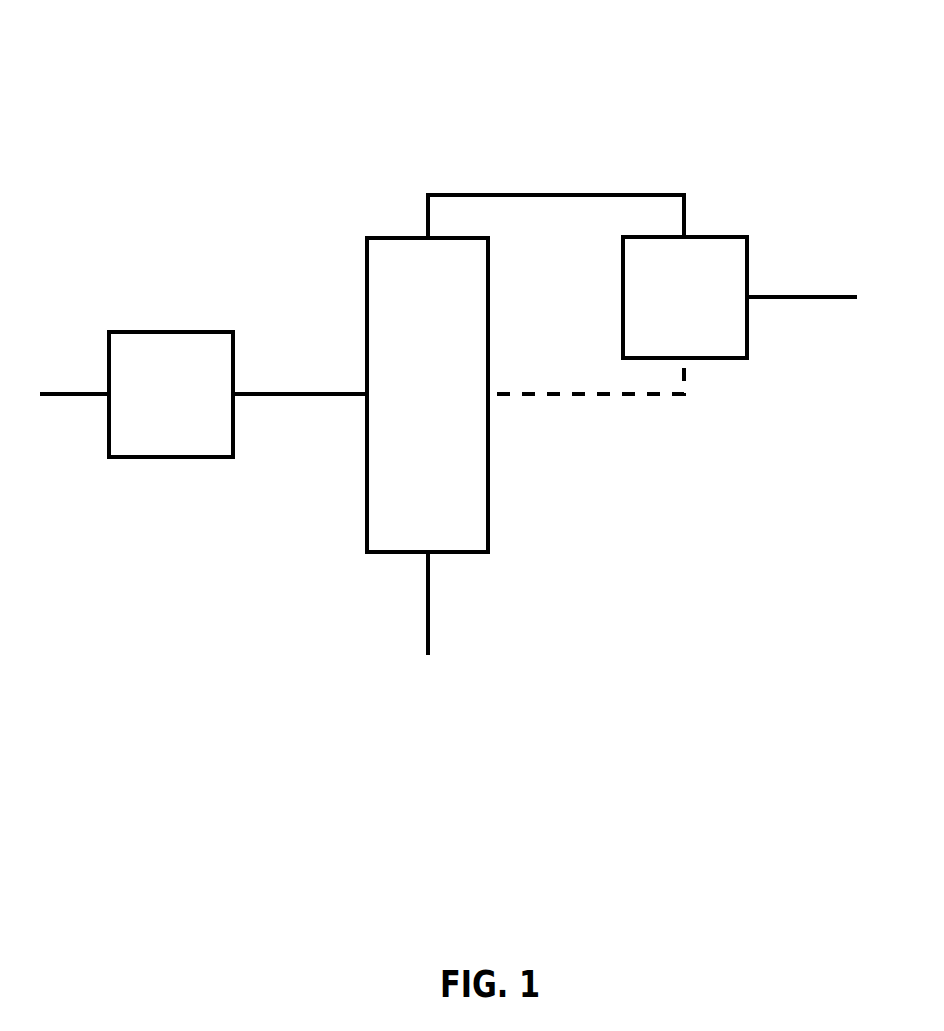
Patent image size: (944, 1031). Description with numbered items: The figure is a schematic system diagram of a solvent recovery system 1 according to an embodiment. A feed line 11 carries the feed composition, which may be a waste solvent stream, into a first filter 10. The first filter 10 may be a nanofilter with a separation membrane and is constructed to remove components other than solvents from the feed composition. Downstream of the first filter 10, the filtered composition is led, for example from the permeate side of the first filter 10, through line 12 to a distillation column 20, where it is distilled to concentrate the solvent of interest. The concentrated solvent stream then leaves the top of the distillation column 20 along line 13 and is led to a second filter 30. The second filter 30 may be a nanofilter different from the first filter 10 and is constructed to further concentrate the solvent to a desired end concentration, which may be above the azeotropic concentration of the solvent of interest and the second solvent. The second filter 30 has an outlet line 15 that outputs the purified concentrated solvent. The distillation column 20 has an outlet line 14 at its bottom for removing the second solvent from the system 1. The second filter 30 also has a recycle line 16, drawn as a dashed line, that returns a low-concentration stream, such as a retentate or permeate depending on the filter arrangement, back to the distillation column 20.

The system 1 is at (170, 138).
The first filter 10 is at (174, 330).
The feed line 11 is at (80, 390).
The line 12 is at (298, 390).
The overhead stream 13 is at (558, 192).
The outlet line 14 is at (428, 601).
The outlet line 15 is at (803, 293).
The recycle line 16 is at (573, 392).
The distillation column 20 is at (387, 236).
The second filter 30 is at (724, 236).